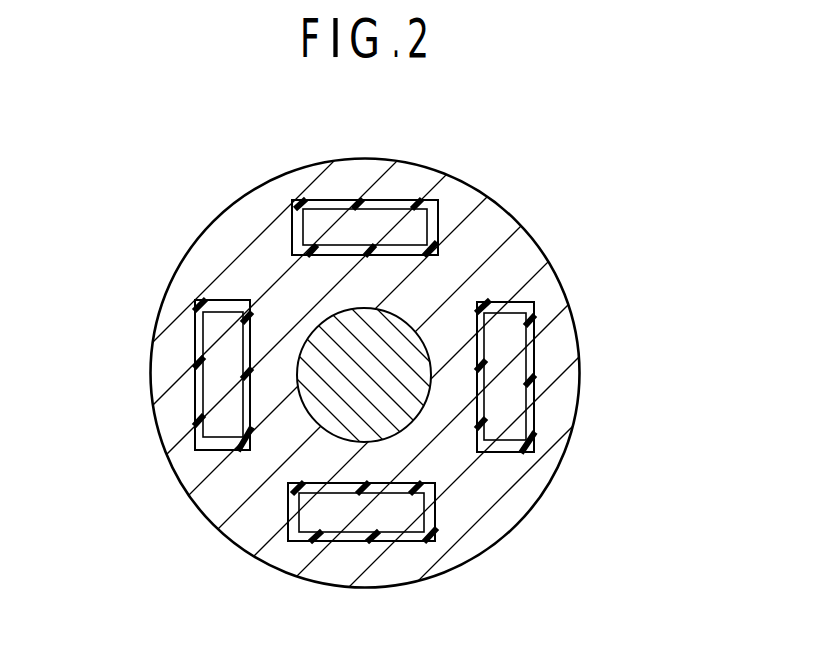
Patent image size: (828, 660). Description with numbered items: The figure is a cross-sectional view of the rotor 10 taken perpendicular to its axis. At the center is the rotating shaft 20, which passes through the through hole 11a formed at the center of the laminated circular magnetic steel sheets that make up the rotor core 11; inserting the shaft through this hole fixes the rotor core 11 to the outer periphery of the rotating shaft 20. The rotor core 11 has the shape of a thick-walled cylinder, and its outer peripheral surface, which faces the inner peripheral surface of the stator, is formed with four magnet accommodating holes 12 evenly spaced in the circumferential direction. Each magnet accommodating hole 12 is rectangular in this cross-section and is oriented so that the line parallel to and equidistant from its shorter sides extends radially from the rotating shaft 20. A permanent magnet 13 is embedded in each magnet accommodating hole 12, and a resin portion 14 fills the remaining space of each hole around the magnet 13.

The rotor 10 is at (512, 160).
The rotor core 11 is at (518, 277).
The through hole 11a is at (416, 328).
The magnet accommodating hole 12 is at (353, 201).
The magnet 13 is at (378, 218).
The resin portion 14 is at (441, 212).
The rotating shaft 20 is at (348, 347).